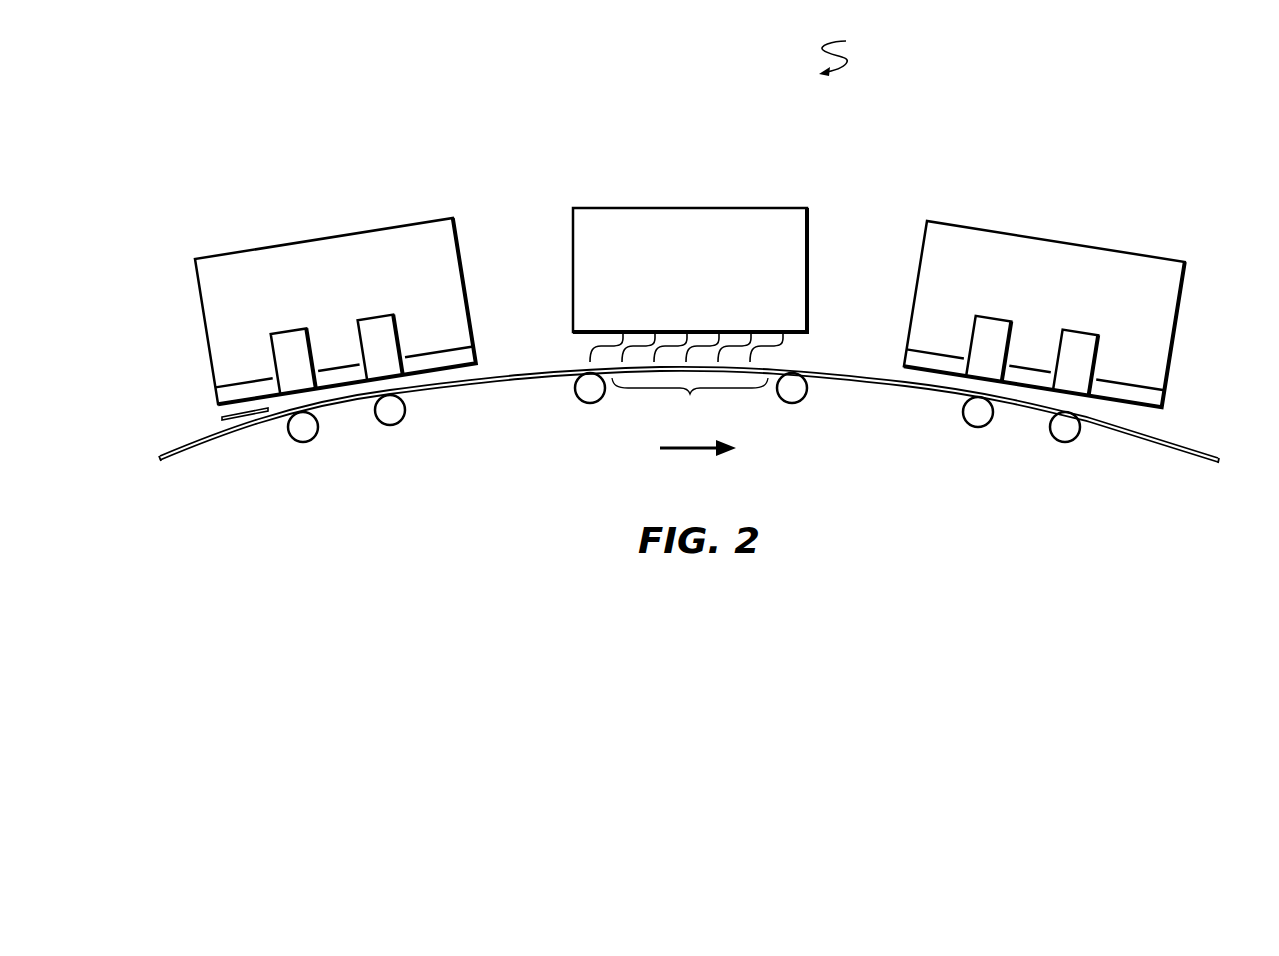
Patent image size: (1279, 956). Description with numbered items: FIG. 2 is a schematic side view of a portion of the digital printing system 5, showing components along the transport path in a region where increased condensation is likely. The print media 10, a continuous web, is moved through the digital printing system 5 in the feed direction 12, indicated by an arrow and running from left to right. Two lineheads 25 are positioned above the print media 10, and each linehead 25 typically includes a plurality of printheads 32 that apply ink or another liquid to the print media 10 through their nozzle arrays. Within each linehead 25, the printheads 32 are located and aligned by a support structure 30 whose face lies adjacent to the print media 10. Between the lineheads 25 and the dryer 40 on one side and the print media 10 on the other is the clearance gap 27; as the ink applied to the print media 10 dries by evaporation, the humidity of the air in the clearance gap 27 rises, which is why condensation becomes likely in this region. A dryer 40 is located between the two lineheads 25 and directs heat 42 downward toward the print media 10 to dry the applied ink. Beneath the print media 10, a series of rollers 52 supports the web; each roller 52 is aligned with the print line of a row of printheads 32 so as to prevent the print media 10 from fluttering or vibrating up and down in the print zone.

The digital printing system 5 is at (841, 53).
The print media 10 is at (1190, 444).
The feed direction 12 is at (690, 454).
The linehead 25 is at (314, 240).
The clearance gap 27 is at (222, 417).
The support structure 30 is at (219, 388).
The printhead 32 is at (289, 329).
The dryer 40 is at (713, 207).
The heat 42 is at (686, 377).
The roller 52 is at (307, 443).